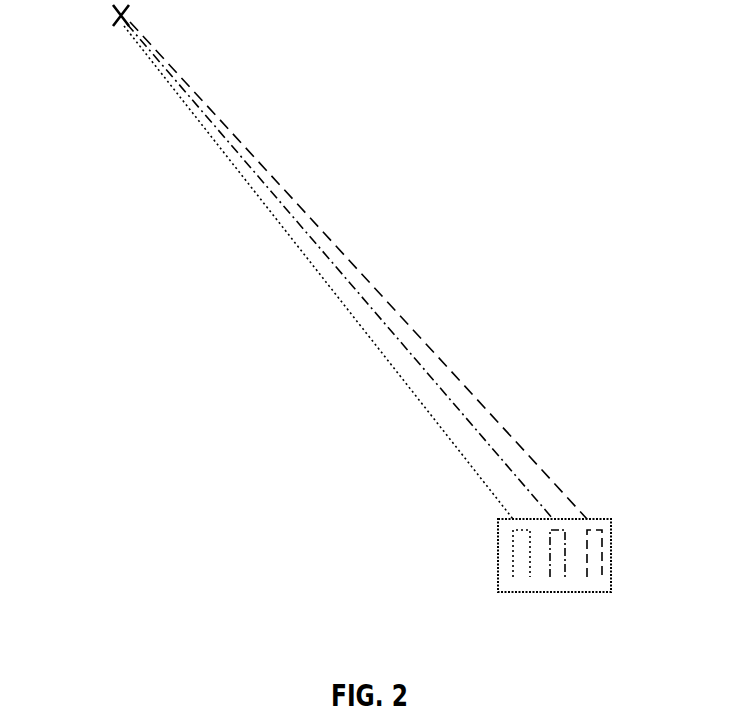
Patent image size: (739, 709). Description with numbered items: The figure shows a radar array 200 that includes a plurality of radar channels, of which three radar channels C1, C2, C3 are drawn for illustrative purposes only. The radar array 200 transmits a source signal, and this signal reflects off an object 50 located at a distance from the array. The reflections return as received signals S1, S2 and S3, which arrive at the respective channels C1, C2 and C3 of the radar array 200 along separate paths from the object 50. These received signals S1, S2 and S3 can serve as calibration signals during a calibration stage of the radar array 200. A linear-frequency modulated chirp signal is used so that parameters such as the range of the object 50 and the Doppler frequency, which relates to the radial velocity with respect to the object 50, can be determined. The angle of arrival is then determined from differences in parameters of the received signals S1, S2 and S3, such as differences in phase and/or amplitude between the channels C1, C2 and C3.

The object 50 is at (118, 32).
The radar array 200 is at (473, 582).
The received signal S1 is at (430, 413).
The received signal S2 is at (488, 446).
The received signal S3 is at (440, 353).
The radar channel C1 is at (522, 570).
The radar channel C2 is at (557, 570).
The radar channel C3 is at (596, 570).